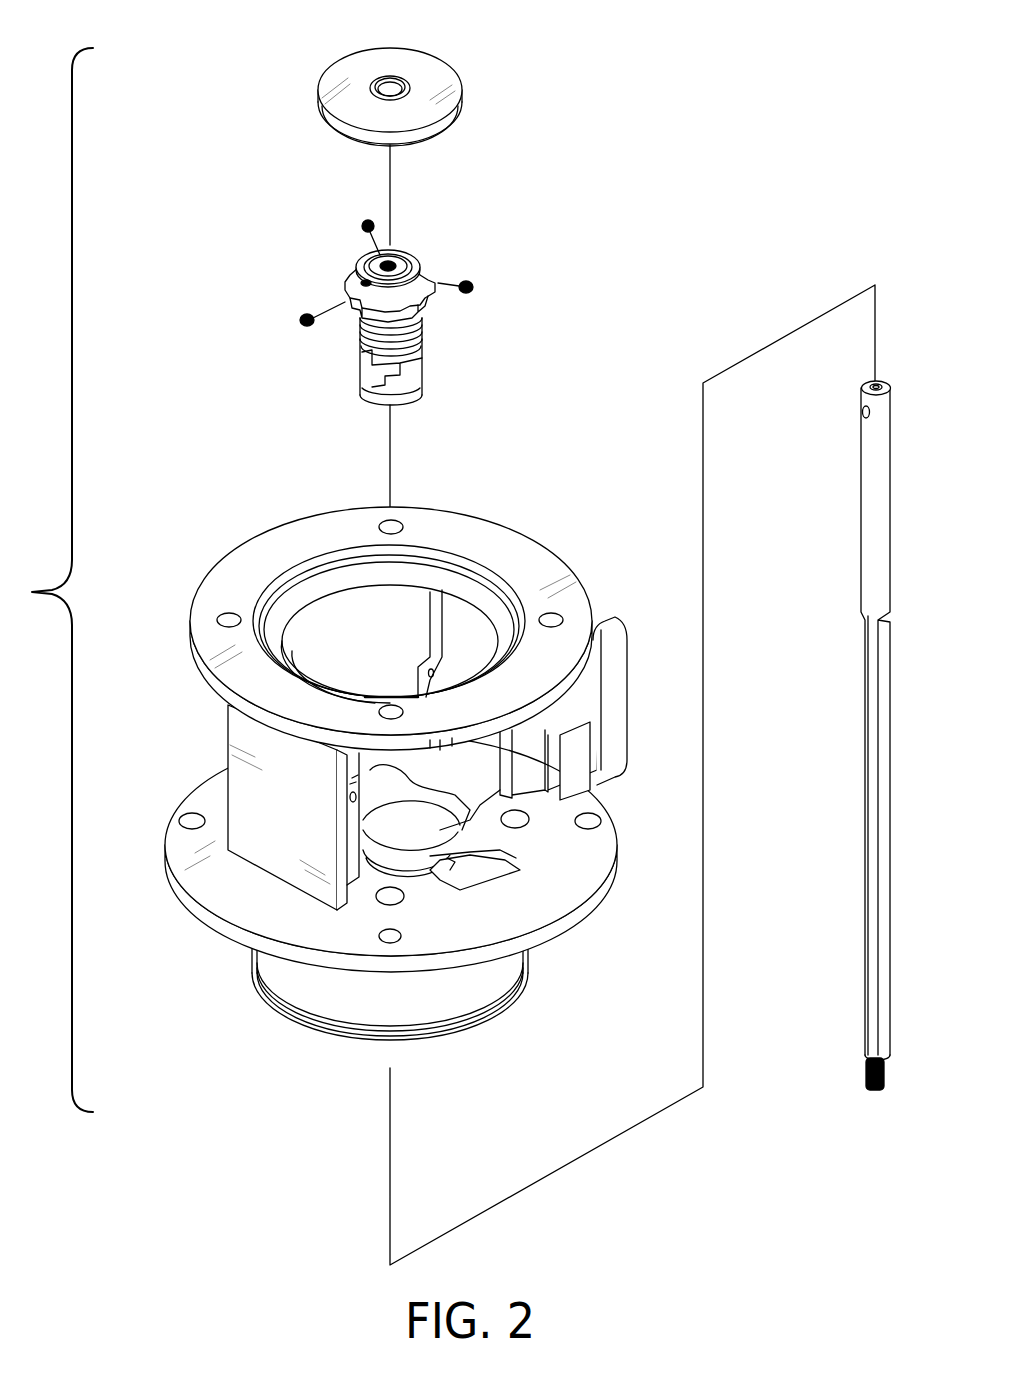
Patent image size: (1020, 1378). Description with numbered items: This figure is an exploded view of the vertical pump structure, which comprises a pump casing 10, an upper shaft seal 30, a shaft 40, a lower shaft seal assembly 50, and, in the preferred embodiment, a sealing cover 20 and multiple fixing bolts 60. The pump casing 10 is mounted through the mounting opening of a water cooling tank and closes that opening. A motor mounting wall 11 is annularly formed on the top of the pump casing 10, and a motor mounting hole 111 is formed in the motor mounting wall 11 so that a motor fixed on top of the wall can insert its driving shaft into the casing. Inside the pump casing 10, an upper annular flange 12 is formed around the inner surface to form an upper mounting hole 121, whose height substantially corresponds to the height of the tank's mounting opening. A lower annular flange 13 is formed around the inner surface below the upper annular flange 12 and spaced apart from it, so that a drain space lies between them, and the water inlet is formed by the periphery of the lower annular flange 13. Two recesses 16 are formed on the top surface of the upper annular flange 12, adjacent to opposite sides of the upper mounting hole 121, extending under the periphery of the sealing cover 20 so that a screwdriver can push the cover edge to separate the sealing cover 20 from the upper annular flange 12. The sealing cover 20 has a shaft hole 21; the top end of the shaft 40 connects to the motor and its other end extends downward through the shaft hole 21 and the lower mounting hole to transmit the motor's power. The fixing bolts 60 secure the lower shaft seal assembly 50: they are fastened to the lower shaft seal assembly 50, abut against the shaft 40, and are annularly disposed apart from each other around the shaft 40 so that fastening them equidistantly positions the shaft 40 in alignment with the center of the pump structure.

The pump casing 10 is at (207, 537).
The motor mounting wall 11 is at (352, 609).
The motor mounting hole 111 is at (345, 620).
The upper annular flange 12 is at (190, 800).
The upper mounting hole 121 is at (455, 827).
The lower annular flange 13 is at (330, 1003).
The recesses 16 is at (477, 857).
The sealing cover 20 is at (406, 77).
The shaft hole 21 is at (390, 78).
The upper shaft seal 30 is at (370, 88).
The shaft 40 is at (870, 523).
The lower shaft seal assembly 50 is at (450, 338).
The fixing bolts 60 is at (473, 278).